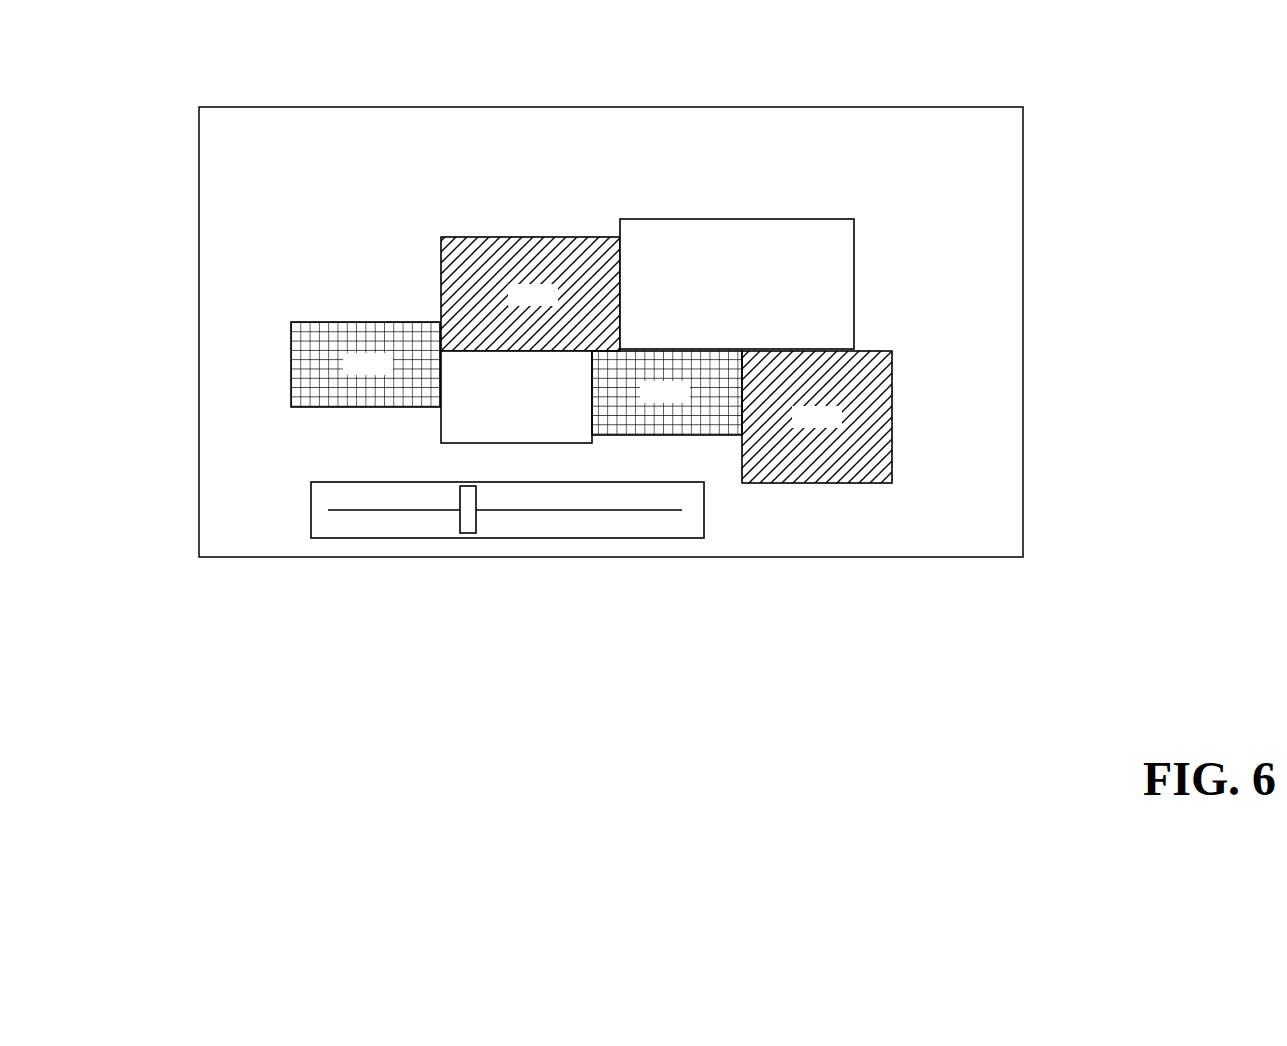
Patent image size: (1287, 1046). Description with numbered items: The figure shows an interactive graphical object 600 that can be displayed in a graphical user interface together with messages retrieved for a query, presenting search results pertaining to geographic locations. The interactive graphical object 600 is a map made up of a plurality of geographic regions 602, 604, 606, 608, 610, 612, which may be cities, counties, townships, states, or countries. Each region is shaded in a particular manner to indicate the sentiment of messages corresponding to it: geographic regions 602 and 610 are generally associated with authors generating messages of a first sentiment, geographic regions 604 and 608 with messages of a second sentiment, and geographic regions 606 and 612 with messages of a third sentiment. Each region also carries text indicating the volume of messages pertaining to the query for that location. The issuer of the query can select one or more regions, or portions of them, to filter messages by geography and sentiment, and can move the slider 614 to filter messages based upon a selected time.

The interactive graphical object 600 is at (614, 288).
The geographic region 602 is at (313, 322).
The geographic region 604 is at (440, 420).
The geographic region 606 is at (481, 237).
The geographic region 608 is at (762, 218).
The geographic region 610 is at (697, 436).
The geographic region 612 is at (893, 388).
The slider 614 is at (705, 524).